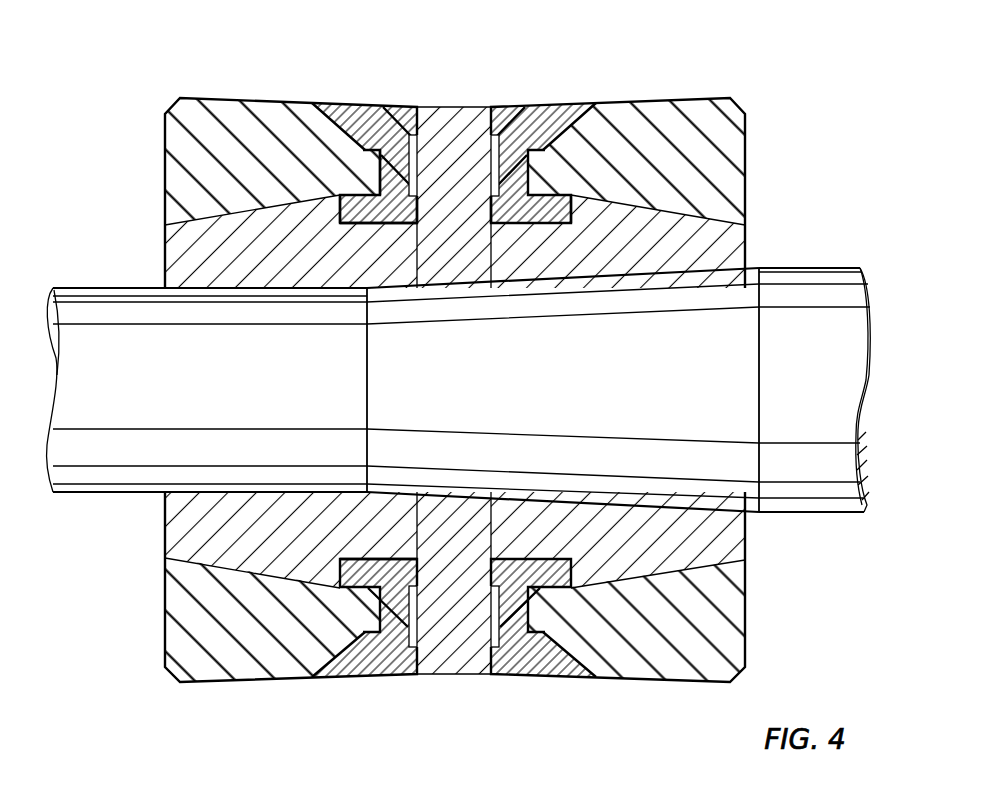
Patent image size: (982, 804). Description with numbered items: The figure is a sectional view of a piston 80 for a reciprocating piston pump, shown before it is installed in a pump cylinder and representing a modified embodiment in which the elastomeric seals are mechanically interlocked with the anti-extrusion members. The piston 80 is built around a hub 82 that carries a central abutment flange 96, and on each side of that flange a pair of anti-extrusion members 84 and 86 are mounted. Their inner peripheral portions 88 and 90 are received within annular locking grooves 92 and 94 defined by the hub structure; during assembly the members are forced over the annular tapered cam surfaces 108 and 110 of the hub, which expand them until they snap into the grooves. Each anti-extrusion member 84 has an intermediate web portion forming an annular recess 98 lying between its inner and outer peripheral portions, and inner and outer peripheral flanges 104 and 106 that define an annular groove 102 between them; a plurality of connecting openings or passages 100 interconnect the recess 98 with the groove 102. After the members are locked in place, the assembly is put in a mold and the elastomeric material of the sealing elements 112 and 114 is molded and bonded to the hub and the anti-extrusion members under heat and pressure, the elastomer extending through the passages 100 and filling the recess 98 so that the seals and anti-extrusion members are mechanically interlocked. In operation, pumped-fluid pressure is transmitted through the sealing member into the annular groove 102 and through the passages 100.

The piston 80 is at (760, 57).
The hub 82 is at (486, 276).
The anti-extrusion member 84 is at (392, 111).
The anti-extrusion member 86 is at (518, 113).
The inner peripheral portion 88 is at (414, 200).
The inner peripheral portion 90 is at (521, 212).
The annular locking groove 92 is at (368, 185).
The annular locking groove 94 is at (568, 214).
The abutment flange 96 is at (462, 120).
The annular recess 98 is at (415, 130).
The connecting openings or passages 100 is at (402, 652).
The annular groove 102 is at (343, 212).
The inner peripheral flange 104 is at (334, 194).
The outer peripheral flange 106 is at (350, 107).
The annular tapered cam surface 108 is at (220, 212).
The annular tapered cam surface 110 is at (713, 218).
The sealing element 112 is at (231, 98).
The sealing element 114 is at (664, 98).